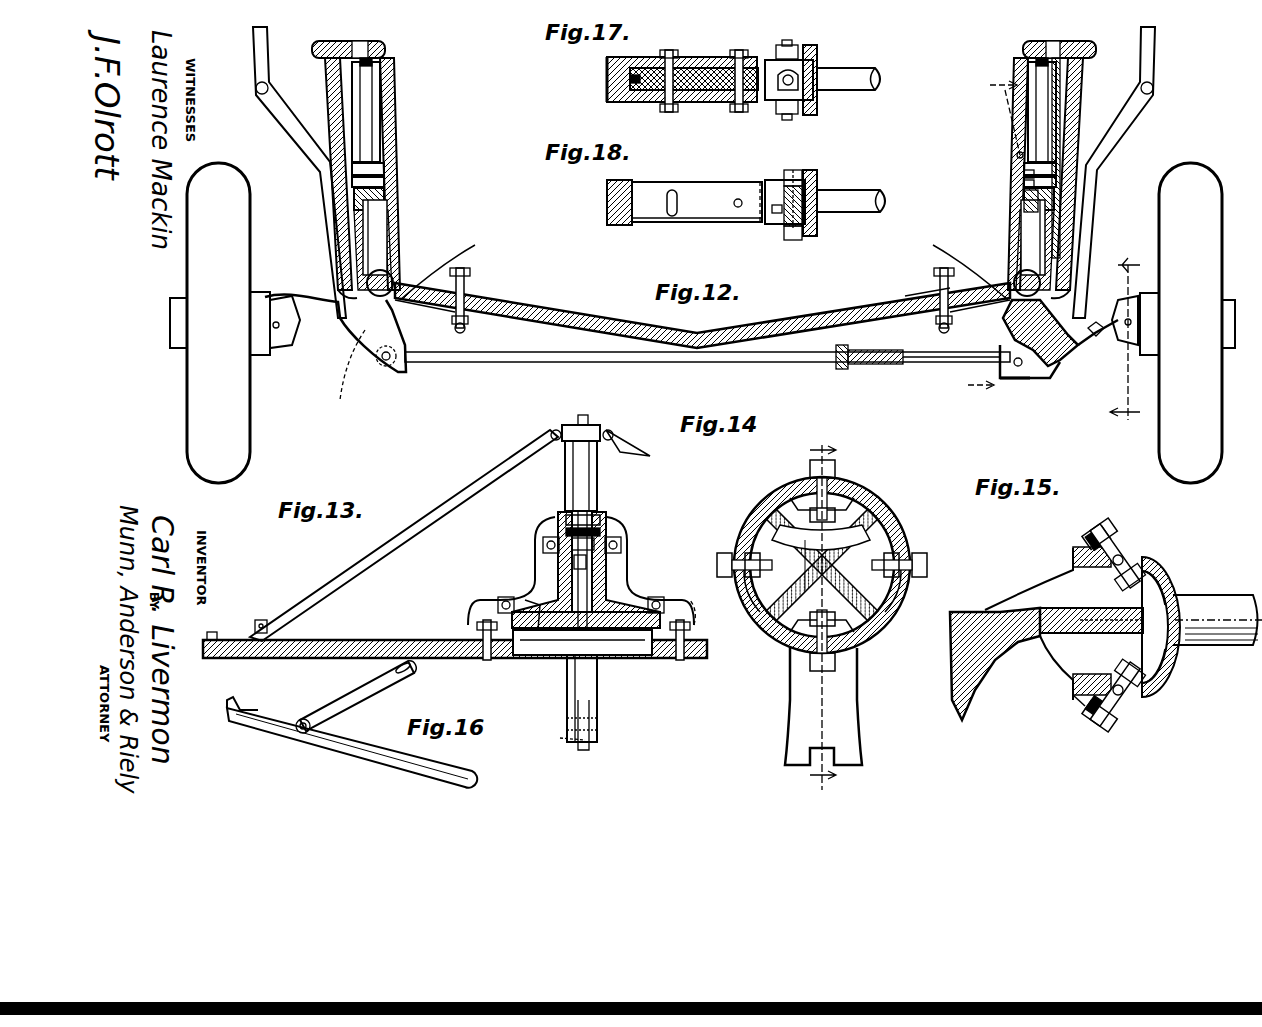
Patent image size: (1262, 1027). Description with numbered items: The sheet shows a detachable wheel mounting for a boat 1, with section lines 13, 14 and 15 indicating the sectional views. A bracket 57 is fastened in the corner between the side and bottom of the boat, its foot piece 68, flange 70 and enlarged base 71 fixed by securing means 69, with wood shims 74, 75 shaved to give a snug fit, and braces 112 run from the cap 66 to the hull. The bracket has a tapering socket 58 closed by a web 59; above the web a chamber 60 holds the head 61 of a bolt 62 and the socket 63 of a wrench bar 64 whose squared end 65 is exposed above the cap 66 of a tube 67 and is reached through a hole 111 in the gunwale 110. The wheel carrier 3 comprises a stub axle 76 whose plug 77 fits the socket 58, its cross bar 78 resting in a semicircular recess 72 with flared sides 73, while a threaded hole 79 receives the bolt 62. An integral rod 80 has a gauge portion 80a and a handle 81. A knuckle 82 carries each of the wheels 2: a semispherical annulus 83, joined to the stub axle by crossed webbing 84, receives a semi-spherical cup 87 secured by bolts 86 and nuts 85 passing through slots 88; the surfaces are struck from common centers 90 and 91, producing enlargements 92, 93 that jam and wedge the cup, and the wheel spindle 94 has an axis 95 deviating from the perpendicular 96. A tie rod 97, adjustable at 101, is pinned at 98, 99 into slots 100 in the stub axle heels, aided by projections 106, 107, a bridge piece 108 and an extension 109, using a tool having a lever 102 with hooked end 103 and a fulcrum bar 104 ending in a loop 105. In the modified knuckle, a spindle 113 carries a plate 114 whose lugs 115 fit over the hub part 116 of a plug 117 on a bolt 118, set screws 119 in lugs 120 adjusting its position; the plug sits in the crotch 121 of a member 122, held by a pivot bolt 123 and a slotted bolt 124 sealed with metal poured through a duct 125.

In FIG. 12, the boat 1 is at (845, 308).
In FIG. 12, the wheels 2 is at (220, 165).
In FIG. 12, the detachable mounting or wheel carrier 3 is at (704, 310).
In FIG. 12, the section line 13— 13 is at (992, 232).
In FIG. 12, the section line 14— 14 is at (1125, 341).
In FIG. 14, the section line 15— 15 is at (820, 619).
In FIG. 12, the bracket 57 is at (458, 255).
In FIG. 13, the bracket 57 is at (639, 582).
In FIG. 12, the tapering socket 58 is at (1024, 200).
In FIG. 13, the tapering socket 58 is at (568, 575).
In FIG. 12, the web 59 is at (1024, 174).
In FIG. 12, the chamber 60 is at (1016, 156).
In FIG. 12, the head 61 is at (386, 183).
In FIG. 12, the bolt 62 is at (386, 202).
In FIG. 12, the socket 63 is at (386, 168).
In FIG. 13, the socket 63 is at (602, 530).
In FIG. 12, the wrench bar 64 is at (367, 103).
In FIG. 12, the squared end 65 is at (372, 60).
In FIG. 12, the cap 66 is at (394, 80).
In FIG. 13, the cap 66 is at (600, 428).
In FIG. 12, the tube 67 is at (1062, 88).
In FIG. 13, the tube 67 is at (598, 462).
In FIG. 12, the foot piece 68 is at (466, 285).
In FIG. 12, the securing means 69 is at (702, 329).
In FIG. 13, the securing means 69 is at (548, 595).
In FIG. 15, the securing means 69 is at (1130, 556).
In FIG. 13, the flange 70 is at (618, 568).
In FIG. 13, the enlarged base 71 is at (524, 615).
In FIG. 13, the semicircular recess 72 is at (545, 640).
In FIG. 12, the flared sides 73 is at (500, 300).
In FIG. 12, the shim 74 is at (340, 212).
In FIG. 12, the shim 75 is at (920, 292).
In FIG. 12, the stub axle 76 is at (340, 348).
In FIG. 13, the stub axle 76 is at (598, 696).
In FIG. 14, the stub axle 76 is at (850, 698).
In FIG. 15, the stub axle 76 is at (992, 657).
In FIG. 12, the plug 77 is at (387, 240).
In FIG. 13, the plug 77 is at (576, 560).
In FIG. 12, the cross bar 78 is at (392, 278).
In FIG. 13, the cross bar 78 is at (620, 658).
In FIG. 12, the threaded hole 79 is at (1024, 184).
In FIG. 12, the rod 80 is at (1130, 118).
In FIG. 12, the rod portion 80a is at (322, 172).
In FIG. 12, the handle 81 is at (1153, 88).
In FIG. 12, the knuckle or universal joint 82 is at (272, 285).
In FIG. 14, the knuckle or universal joint 82 is at (760, 495).
In FIG. 15, the knuckle or universal joint 82 is at (1115, 523).
In FIG. 14, the semispherical annulus 83 is at (770, 625).
In FIG. 15, the semispherical annulus 83 is at (1085, 547).
In FIG. 14, the crossed webbing 84 is at (832, 555).
In FIG. 15, the crossed webbing 84 is at (1048, 594).
In FIG. 14, the nuts 85 is at (862, 498).
In FIG. 15, the nuts 85 is at (1080, 572).
In FIG. 14, the bolts 86 is at (828, 466).
In FIG. 15, the bolts 86 is at (1140, 532).
In FIG. 14, the semi-spherical cup 87 is at (788, 635).
In FIG. 15, the semi-spherical cup 87 is at (1180, 594).
In FIG. 14, the slots 88 is at (806, 497).
In FIG. 15, the slots 88 is at (1080, 702).
In FIG. 15, the common center 90 is at (1125, 622).
In FIG. 15, the common center 91 is at (1085, 622).
In FIG. 15, the enlargement 92 is at (1160, 582).
In FIG. 15, the enlargement 93 is at (1100, 532).
In FIG. 15, the wheel spindle 94 is at (1218, 600).
In FIG. 15, the axis 95 is at (1218, 610).
In FIG. 15, the perpendicular 96 is at (1200, 644).
In FIG. 12, the tie rod 97 is at (740, 362).
In FIG. 12, the securing means 98 is at (390, 362).
In FIG. 12, the securing means 99 is at (1018, 367).
In FIG. 12, the slots 100 is at (340, 400).
In FIG. 13, the slots 100 is at (572, 722).
In FIG. 12, the longitudinal adjustment 101 is at (842, 369).
In FIG. 16, the lever 102 is at (362, 750).
In FIG. 16, the hooked end 103 is at (240, 704).
In FIG. 16, the fulcrum bar 104 is at (345, 705).
In FIG. 16, the loop 105 is at (392, 666).
In FIG. 12, the projection 106 is at (965, 365).
In FIG. 12, the projection 107 is at (1096, 337).
In FIG. 13, the bridge piece 108 is at (583, 750).
In FIG. 12, the extension 109 is at (1035, 380).
In FIG. 12, the gunwale 110 is at (385, 46).
In FIG. 12, the hole 111 is at (360, 40).
In FIG. 13, the braces 112 is at (490, 478).
In FIG. 17, the spindle 113 is at (862, 70).
In FIG. 18, the spindle 113 is at (850, 194).
In FIG. 17, the plate 114 is at (818, 102).
In FIG. 18, the plate 114 is at (818, 226).
In FIG. 18, the lugs 115 is at (805, 178).
In FIG. 17, the hub part 116 is at (772, 60).
In FIG. 18, the hub part 116 is at (770, 218).
In FIG. 17, the plug 117 is at (720, 68).
In FIG. 18, the plug 117 is at (648, 218).
In FIG. 18, the bolt 118 is at (800, 170).
In FIG. 17, the set screws 119 is at (795, 44).
In FIG. 17, the lugs 120 is at (792, 114).
In FIG. 18, the lugs 120 is at (786, 174).
In FIG. 17, the crotch 121 is at (692, 57).
In FIG. 17, the member 122 is at (610, 100).
In FIG. 18, the member 122 is at (610, 196).
In FIG. 17, the bolt 123 is at (736, 108).
In FIG. 18, the bolt 123 is at (737, 199).
In FIG. 17, the bolt 124 is at (667, 112).
In FIG. 18, the bolt 124 is at (672, 216).
In FIG. 17, the duct 125 is at (688, 102).